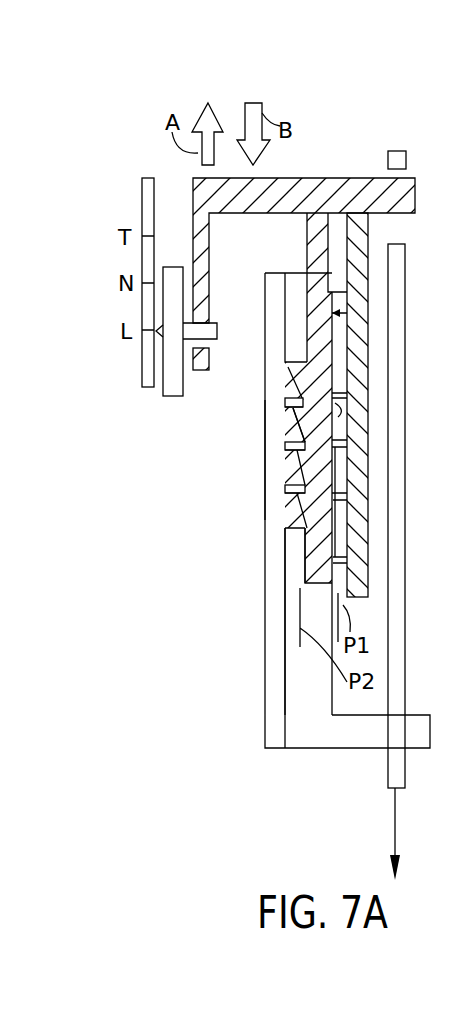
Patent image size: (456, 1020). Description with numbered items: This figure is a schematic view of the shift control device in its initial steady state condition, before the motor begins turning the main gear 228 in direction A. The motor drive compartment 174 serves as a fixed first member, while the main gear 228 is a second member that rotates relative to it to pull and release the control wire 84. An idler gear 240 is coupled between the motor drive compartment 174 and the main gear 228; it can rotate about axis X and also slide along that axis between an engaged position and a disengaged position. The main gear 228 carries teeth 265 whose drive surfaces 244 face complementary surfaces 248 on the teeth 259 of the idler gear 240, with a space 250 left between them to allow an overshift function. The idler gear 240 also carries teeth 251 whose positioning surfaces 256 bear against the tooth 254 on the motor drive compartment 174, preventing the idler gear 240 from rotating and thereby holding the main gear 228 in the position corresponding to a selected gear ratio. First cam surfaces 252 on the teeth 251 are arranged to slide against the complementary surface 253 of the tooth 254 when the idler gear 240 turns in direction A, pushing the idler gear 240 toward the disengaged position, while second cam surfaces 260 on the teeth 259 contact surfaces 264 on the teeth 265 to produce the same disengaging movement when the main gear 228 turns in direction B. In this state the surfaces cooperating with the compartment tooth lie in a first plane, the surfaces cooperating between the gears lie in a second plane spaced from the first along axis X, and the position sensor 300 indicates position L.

The position sensor 300 is at (124, 179).
The main gear 228 is at (285, 188).
The motor drive compartment 174 is at (360, 243).
The idler gear 240 is at (287, 518).
The second cam surfaces 260 is at (293, 358).
The surfaces 264 is at (298, 386).
The space 250 is at (290, 409).
The drive surfaces 244 is at (298, 486).
The surfaces 248 is at (298, 498).
The teeth 265 is at (260, 456).
The teeth 259 is at (293, 539).
The teeth 251 is at (342, 381).
The tooth 254 is at (347, 400).
The first cam surfaces 252 is at (350, 413).
The surface 253 is at (350, 440).
The positioning surfaces 256 is at (345, 452).
The control wire 84 is at (402, 818).